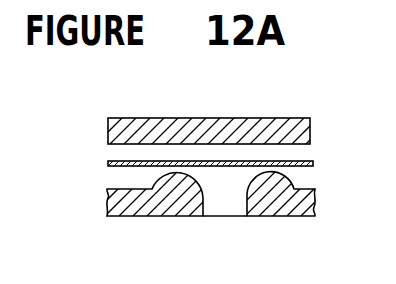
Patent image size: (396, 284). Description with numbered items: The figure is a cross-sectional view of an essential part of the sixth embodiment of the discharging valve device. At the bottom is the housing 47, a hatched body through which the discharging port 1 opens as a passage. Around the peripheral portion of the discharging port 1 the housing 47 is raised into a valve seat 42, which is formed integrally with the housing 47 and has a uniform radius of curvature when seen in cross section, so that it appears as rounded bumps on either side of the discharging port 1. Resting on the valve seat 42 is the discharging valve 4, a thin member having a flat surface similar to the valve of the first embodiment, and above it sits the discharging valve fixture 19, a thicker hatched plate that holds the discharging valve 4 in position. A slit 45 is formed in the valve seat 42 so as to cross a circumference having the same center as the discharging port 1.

The discharging valve fixture 19 is at (188, 142).
The slit 45 is at (200, 173).
The discharging valve 4 is at (313, 164).
The valve seat 42 is at (296, 178).
The housing 47 is at (150, 203).
The discharging port 1 is at (221, 195).